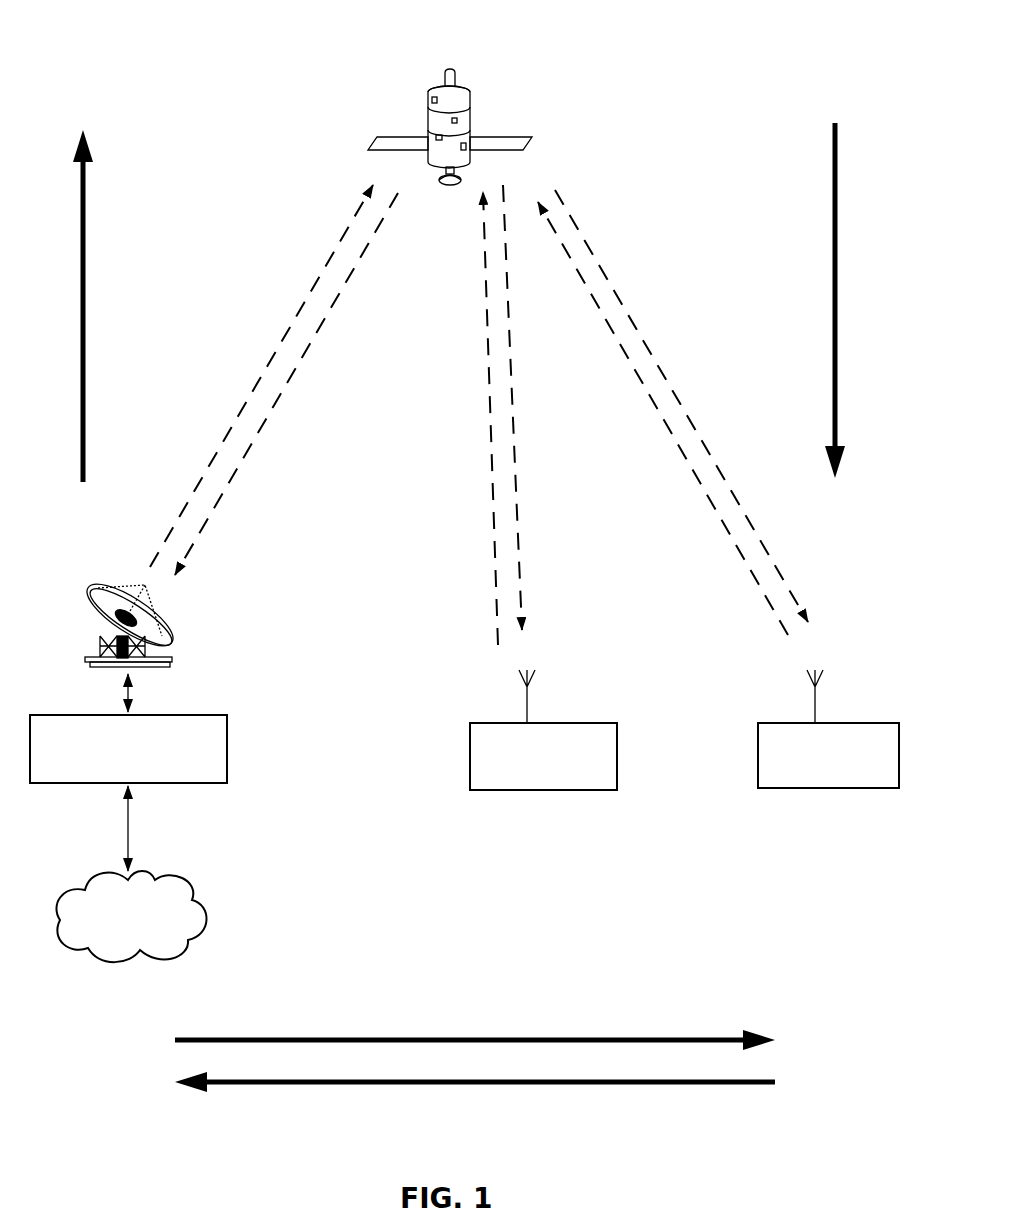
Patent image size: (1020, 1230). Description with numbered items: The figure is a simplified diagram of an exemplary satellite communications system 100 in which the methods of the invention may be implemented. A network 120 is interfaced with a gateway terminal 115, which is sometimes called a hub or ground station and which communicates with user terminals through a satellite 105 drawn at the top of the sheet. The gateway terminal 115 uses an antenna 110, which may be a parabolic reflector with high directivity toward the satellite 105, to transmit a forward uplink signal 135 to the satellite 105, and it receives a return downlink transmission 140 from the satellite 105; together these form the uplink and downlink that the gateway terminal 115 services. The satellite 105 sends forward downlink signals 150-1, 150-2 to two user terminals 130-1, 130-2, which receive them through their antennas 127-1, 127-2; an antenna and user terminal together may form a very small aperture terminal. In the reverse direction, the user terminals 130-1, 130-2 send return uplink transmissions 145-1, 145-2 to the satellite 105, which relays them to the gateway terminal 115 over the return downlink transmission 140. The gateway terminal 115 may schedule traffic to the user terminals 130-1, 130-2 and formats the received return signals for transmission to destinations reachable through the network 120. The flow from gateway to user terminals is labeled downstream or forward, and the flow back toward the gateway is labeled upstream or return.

The satellite communications system 100 is at (634, 134).
The satellite 105 is at (450, 69).
The antenna 110 is at (172, 640).
The gateway terminal 115 is at (228, 752).
The network 120 is at (207, 915).
The antenna 127-1 is at (473, 669).
The antenna 127-2 is at (761, 669).
The user terminal 130-1 is at (470, 755).
The user terminal 130-2 is at (758, 755).
The forward uplink signal 135 is at (263, 372).
The return downlink transmission 140 is at (331, 308).
The return uplink transmission 145-1 is at (493, 420).
The return uplink transmission 145-2 is at (670, 427).
The forward downlink signal 150-1 is at (518, 520).
The forward downlink signal 150-2 is at (620, 300).